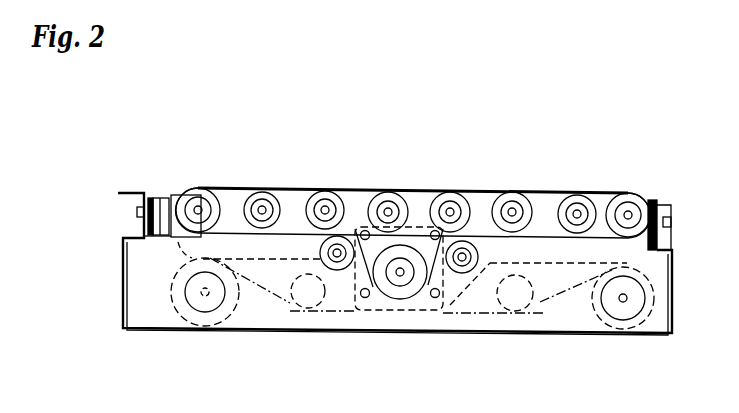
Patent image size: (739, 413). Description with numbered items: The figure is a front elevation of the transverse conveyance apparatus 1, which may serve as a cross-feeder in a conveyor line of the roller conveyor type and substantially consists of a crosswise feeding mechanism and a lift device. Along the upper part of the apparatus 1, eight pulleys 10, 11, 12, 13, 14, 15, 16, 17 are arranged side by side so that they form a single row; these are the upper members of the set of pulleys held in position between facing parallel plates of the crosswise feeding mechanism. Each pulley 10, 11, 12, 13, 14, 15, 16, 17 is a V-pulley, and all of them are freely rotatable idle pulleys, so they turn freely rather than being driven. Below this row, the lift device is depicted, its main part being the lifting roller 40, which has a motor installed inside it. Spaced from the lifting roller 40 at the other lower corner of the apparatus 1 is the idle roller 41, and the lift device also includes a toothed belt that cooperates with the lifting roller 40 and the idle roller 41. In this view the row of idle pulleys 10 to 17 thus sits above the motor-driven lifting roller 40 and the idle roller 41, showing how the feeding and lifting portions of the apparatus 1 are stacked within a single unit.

The transverse conveyance apparatus 1 is at (648, 182).
The pulley 10 is at (198, 210).
The pulley 11 is at (262, 210).
The pulley 12 is at (325, 210).
The pulley 13 is at (388, 212).
The pulley 14 is at (450, 212).
The pulley 15 is at (512, 212).
The pulley 16 is at (577, 214).
The pulley 17 is at (628, 215).
The lifting roller 40 is at (205, 308).
The idle roller 41 is at (623, 318).